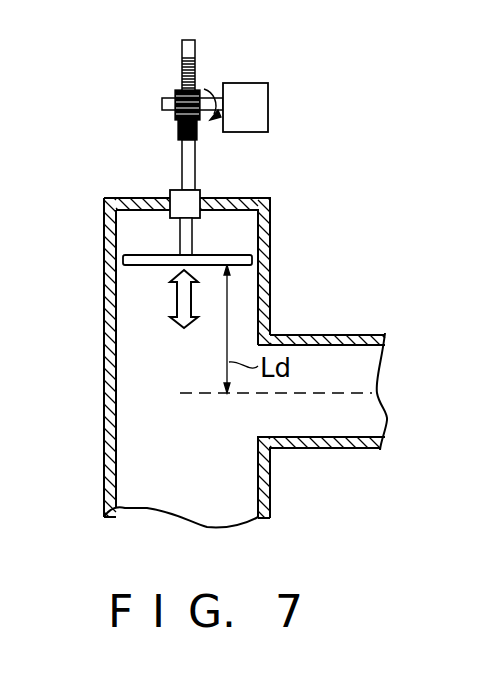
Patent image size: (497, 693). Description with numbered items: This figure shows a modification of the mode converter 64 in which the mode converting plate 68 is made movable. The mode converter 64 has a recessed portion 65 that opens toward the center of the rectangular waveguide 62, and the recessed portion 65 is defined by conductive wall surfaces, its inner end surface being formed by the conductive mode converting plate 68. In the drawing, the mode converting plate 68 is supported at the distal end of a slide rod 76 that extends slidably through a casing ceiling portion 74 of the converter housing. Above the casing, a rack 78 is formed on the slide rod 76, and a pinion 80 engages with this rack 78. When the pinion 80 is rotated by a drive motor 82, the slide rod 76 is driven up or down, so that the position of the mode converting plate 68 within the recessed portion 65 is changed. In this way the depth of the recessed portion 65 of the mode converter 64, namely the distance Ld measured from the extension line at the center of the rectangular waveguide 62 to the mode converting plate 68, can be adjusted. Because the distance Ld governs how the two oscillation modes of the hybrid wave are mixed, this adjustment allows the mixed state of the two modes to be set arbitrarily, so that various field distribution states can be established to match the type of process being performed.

The rectangular waveguide 62 is at (365, 335).
The mode converter 64 is at (104, 311).
The recessed portion 65 is at (235, 298).
The mode converting plate 68 is at (228, 255).
The casing ceiling portion 74 is at (243, 200).
The slide rod 76 is at (182, 155).
The rack 78 is at (194, 63).
The pinion 80 is at (200, 92).
The drive motor 82 is at (268, 107).